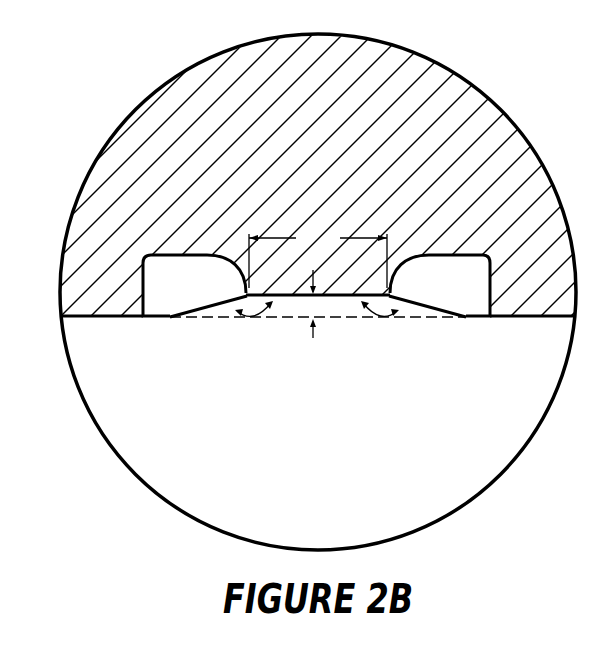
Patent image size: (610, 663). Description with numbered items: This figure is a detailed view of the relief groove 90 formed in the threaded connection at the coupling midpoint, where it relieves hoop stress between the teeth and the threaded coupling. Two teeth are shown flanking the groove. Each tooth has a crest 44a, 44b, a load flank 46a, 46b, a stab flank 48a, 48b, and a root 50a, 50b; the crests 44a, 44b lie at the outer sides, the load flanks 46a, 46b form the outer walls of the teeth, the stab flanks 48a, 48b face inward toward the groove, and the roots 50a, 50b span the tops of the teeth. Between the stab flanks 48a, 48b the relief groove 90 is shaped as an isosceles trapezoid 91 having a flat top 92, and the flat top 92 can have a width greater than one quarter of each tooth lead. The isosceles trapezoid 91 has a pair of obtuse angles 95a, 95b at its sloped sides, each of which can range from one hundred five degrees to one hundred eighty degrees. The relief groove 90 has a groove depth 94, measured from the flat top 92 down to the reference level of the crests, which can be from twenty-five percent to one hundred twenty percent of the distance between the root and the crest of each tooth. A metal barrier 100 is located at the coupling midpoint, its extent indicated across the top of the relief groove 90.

The crest 44a is at (100, 318).
The crest 44b is at (533, 318).
The load flank 46a is at (144, 290).
The load flank 46b is at (490, 290).
The stab flank 48a is at (243, 288).
The stab flank 48b is at (392, 288).
The root 50a is at (180, 257).
The root 50b is at (452, 257).
The relief groove 90 is at (288, 299).
The isosceles trapezoid 91 is at (358, 327).
The flat top 92 is at (337, 297).
The groove depth 94 is at (313, 304).
The obtuse angle 95a is at (253, 316).
The obtuse angle 95b is at (381, 316).
The metal barrier 100 is at (318, 258).